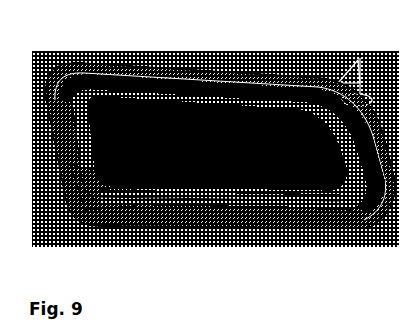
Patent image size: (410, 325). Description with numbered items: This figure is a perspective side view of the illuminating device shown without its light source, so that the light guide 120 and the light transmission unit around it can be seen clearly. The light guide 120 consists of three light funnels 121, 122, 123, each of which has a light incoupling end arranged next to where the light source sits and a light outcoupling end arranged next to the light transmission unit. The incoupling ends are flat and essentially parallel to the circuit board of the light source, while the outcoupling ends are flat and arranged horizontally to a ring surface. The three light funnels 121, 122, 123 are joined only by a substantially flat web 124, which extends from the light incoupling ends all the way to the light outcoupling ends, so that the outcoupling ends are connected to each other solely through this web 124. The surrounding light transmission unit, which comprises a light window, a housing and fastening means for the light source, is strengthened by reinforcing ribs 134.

The light guide 120 is at (177, 126).
The light funnel 121 is at (133, 170).
The light funnel 122 is at (212, 152).
The light funnel 123 is at (283, 145).
The web 124 is at (196, 160).
The reinforcing ribs 134 is at (79, 63).